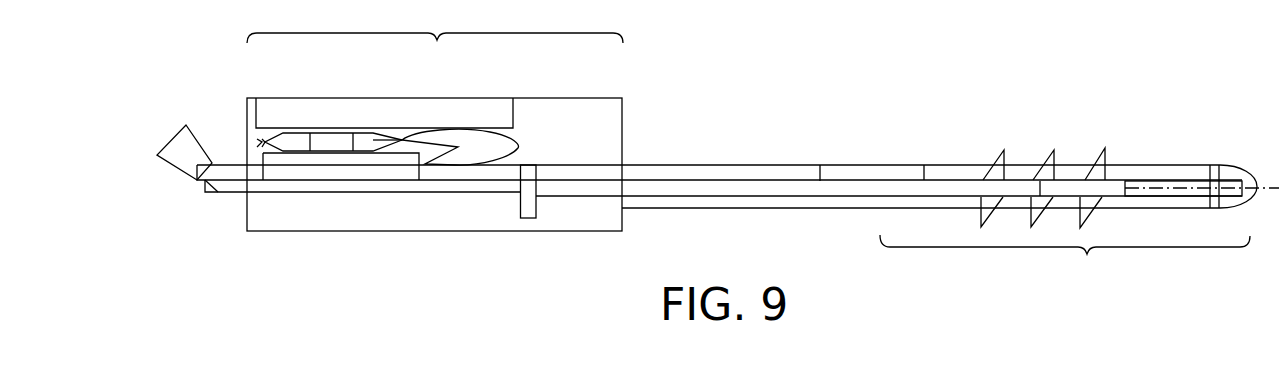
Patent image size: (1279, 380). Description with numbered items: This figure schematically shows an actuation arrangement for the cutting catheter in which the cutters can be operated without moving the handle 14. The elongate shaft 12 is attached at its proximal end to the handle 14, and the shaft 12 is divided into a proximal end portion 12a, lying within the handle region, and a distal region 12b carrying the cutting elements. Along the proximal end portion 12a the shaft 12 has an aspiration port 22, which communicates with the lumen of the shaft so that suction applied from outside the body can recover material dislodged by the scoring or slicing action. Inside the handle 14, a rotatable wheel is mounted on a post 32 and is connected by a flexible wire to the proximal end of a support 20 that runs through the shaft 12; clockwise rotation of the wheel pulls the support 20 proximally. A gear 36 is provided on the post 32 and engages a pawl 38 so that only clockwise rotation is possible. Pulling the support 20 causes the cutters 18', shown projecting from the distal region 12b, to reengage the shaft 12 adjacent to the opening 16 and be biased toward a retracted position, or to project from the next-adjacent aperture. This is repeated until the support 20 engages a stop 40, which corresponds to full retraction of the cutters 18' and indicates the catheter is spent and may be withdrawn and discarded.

The shaft 12 is at (937, 165).
The proximal end portion 12a is at (435, 21).
The distal portion of shaft 12b is at (1065, 262).
The handle 14 is at (568, 98).
The opening 16 is at (993, 165).
The barbs 18' is at (1043, 162).
The support 20 is at (840, 197).
The aspiration port 22 is at (172, 138).
The post 32 is at (333, 133).
The gear 36 is at (283, 133).
The pawl 38 is at (510, 130).
The stop 40 is at (527, 219).